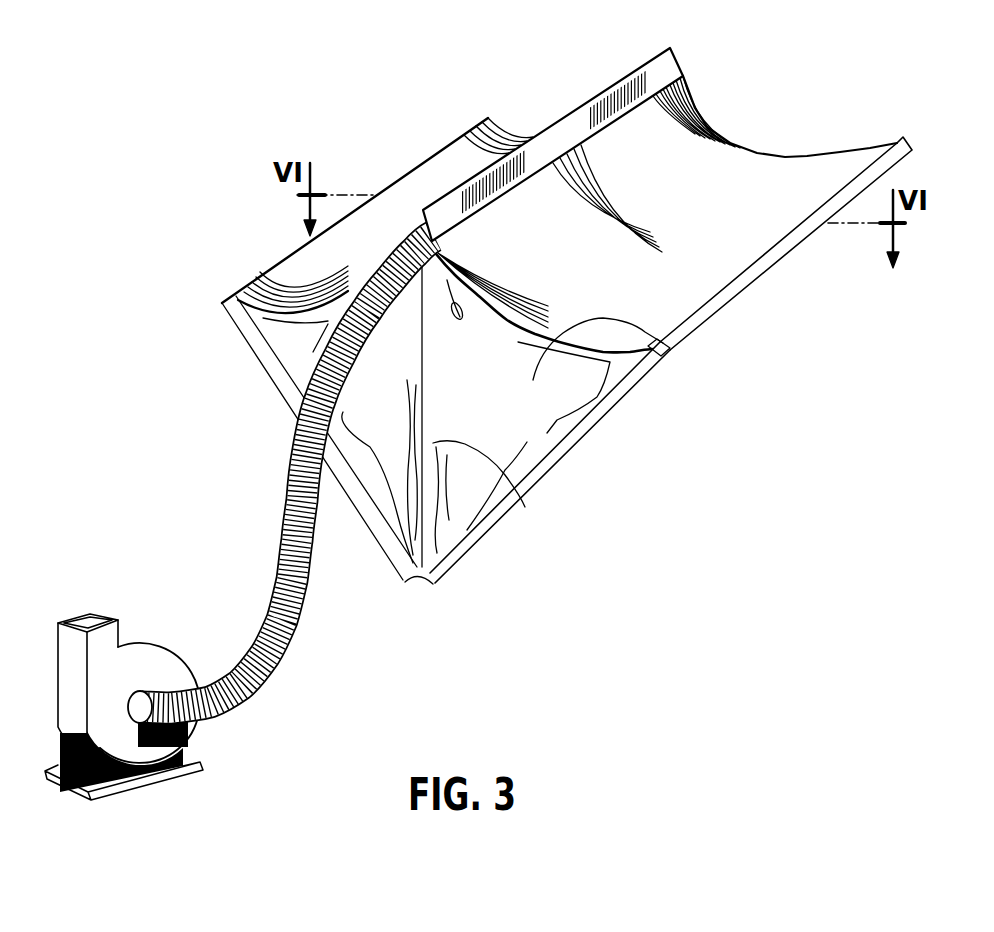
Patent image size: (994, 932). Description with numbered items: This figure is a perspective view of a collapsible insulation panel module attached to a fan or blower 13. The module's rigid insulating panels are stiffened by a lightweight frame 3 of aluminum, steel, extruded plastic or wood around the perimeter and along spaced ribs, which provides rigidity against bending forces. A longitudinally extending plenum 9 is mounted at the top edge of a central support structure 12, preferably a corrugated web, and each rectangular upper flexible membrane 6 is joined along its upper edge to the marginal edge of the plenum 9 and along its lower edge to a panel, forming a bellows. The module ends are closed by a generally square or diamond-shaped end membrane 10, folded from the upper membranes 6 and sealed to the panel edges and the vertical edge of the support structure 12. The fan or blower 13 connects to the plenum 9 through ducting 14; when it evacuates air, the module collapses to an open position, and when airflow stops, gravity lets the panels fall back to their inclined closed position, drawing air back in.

The frame 3 is at (278, 263).
The upper flexible membrane 6 is at (780, 165).
The plenum 9 is at (615, 88).
The end membrane 10 is at (662, 348).
The central support structure 12 is at (525, 507).
The fan or blower 13 is at (145, 660).
The ducting 14 is at (292, 635).